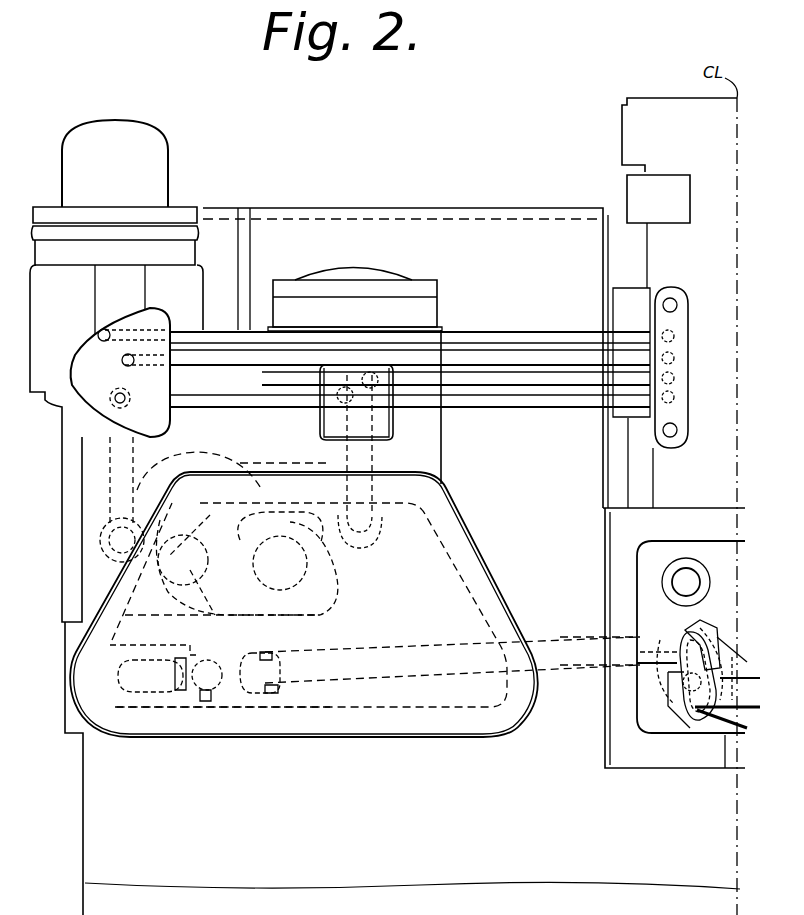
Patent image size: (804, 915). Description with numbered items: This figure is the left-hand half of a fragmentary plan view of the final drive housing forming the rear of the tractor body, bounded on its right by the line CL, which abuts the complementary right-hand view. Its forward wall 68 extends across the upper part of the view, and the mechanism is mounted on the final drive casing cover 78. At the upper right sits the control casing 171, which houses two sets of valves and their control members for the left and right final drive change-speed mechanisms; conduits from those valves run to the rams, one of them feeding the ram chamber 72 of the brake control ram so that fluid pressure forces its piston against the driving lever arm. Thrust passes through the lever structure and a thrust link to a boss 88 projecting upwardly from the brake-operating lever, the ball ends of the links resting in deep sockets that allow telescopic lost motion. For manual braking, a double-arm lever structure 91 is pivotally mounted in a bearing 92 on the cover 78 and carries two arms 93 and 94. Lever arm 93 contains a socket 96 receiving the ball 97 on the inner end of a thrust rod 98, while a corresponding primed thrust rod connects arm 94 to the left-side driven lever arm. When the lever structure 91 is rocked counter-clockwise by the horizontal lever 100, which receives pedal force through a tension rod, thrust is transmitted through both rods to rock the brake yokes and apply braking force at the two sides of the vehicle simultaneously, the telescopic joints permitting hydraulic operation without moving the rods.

The control casing 171 is at (647, 100).
The forward wall of the final drive casing 68 is at (420, 215).
The ram chamber 72 is at (437, 305).
The final drive casing cover 78 is at (592, 320).
The boss 88 is at (132, 708).
The lever arm 94 is at (700, 625).
The bearing 92 is at (732, 652).
The double-arm lever structure 91 is at (686, 671).
The lever arm 93 is at (673, 725).
The ball 97 is at (703, 728).
The socket 96 is at (688, 700).
The thrust rod 98 is at (723, 733).
The horizontal lever 100 is at (742, 768).